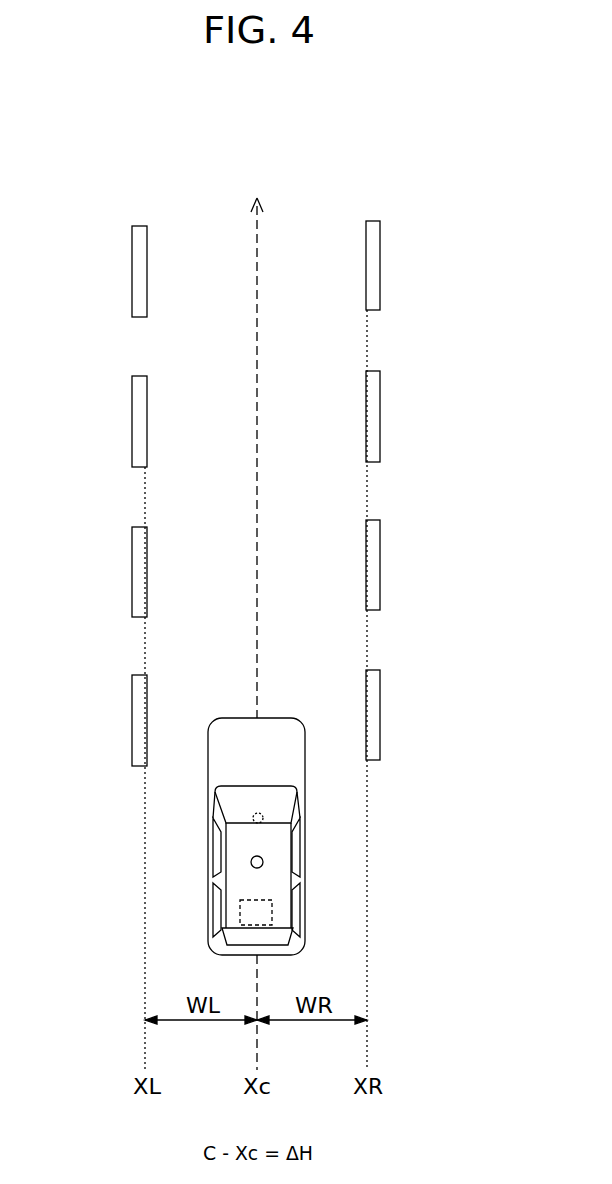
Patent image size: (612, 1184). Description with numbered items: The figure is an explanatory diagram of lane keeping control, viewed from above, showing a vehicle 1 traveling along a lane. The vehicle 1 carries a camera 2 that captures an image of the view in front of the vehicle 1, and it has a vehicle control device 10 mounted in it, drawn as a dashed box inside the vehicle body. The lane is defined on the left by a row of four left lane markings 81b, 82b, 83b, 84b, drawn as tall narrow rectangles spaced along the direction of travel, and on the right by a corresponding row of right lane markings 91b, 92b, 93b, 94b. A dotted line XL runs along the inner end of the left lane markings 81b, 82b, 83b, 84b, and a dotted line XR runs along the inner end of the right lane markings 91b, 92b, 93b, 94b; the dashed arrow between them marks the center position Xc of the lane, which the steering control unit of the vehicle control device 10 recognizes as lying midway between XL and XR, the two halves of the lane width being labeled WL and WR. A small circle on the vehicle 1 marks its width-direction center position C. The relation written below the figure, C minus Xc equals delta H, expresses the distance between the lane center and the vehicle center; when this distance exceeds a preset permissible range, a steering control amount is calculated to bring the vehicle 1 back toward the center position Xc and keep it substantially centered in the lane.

The vehicle 1 is at (275, 881).
The camera 2 is at (264, 816).
The width-direction center position of the vehicle C is at (263, 862).
The vehicle control device 10 is at (240, 900).
The left lane marking 81b is at (139, 720).
The left lane marking 82b is at (139, 572).
The left lane marking 83b is at (139, 420).
The left lane marking 84b is at (139, 268).
The right lane marking 91b is at (374, 709).
The right lane marking 92b is at (374, 559).
The right lane marking 93b is at (374, 411).
The right lane marking 94b is at (374, 262).